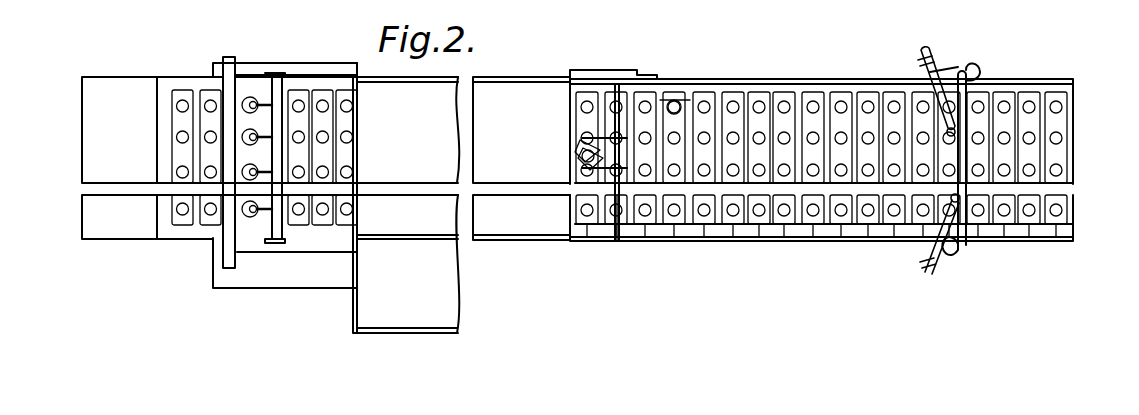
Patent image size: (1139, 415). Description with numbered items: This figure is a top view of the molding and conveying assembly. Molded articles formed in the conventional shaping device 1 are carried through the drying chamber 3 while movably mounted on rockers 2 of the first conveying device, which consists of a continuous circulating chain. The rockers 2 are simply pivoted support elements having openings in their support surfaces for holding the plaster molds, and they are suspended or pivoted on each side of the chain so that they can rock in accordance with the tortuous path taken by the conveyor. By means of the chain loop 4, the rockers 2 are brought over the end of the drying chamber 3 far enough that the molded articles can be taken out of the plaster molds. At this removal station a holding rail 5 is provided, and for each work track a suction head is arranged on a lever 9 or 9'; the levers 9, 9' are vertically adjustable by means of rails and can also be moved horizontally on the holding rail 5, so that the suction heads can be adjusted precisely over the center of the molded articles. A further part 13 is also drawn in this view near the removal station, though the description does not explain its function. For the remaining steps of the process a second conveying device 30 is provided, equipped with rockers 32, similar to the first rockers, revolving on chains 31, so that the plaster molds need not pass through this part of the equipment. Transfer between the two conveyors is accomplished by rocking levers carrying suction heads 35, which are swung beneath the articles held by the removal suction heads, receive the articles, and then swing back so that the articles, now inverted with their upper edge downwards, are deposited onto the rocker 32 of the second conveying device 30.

The shaping device 1 is at (243, 100).
The rockers 2 is at (298, 98).
The drying chamber 3 is at (507, 105).
The chain loop 4 is at (584, 75).
The holding rail 5 is at (616, 95).
The lever 9 is at (623, 237).
The lever 9' is at (649, 135).
The clamp 13 is at (595, 228).
The second conveying device 30 is at (817, 83).
The chains 31 is at (661, 93).
The rockers 32 is at (675, 104).
The suction heads 35 is at (676, 97).